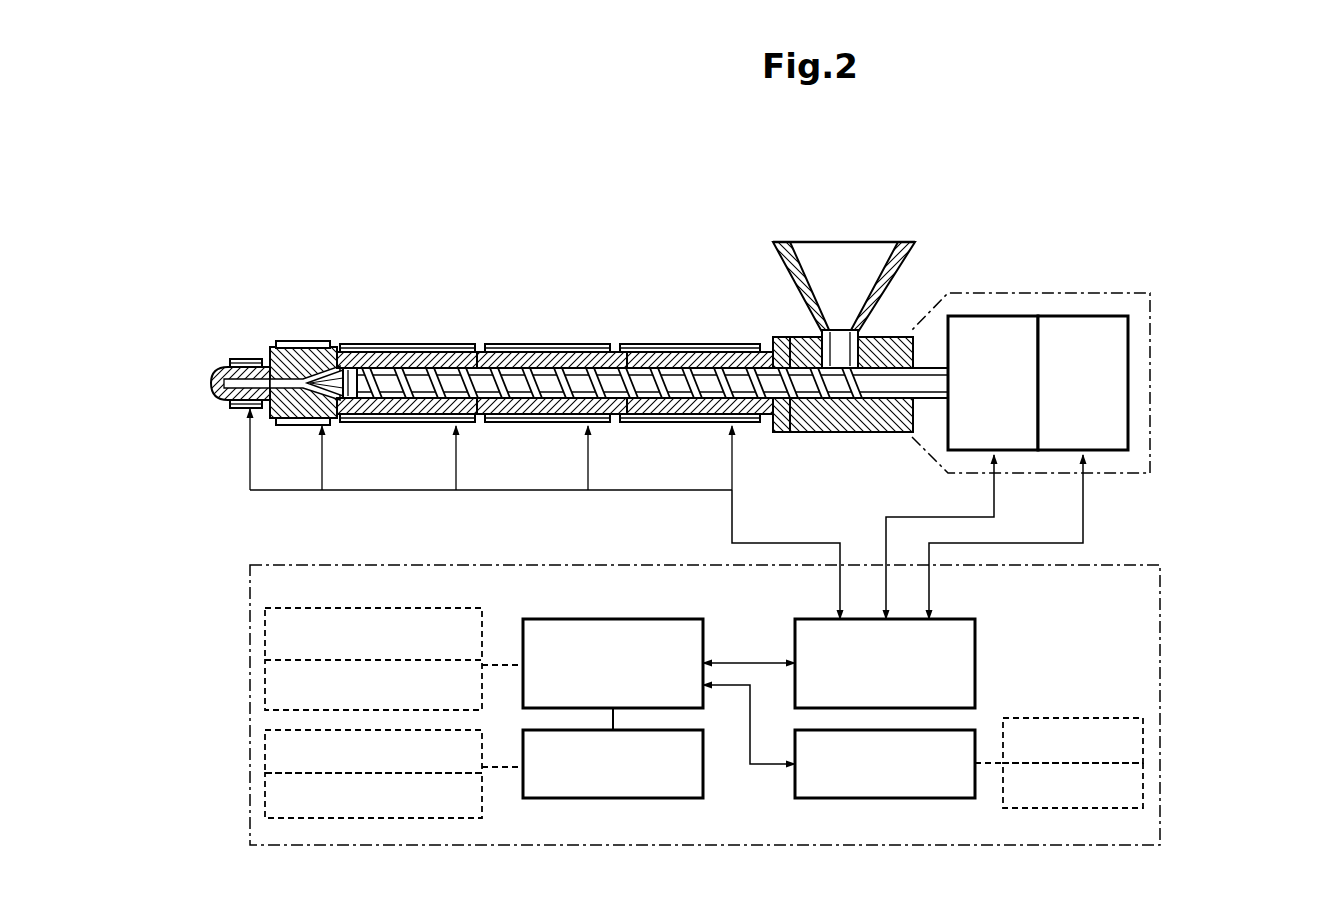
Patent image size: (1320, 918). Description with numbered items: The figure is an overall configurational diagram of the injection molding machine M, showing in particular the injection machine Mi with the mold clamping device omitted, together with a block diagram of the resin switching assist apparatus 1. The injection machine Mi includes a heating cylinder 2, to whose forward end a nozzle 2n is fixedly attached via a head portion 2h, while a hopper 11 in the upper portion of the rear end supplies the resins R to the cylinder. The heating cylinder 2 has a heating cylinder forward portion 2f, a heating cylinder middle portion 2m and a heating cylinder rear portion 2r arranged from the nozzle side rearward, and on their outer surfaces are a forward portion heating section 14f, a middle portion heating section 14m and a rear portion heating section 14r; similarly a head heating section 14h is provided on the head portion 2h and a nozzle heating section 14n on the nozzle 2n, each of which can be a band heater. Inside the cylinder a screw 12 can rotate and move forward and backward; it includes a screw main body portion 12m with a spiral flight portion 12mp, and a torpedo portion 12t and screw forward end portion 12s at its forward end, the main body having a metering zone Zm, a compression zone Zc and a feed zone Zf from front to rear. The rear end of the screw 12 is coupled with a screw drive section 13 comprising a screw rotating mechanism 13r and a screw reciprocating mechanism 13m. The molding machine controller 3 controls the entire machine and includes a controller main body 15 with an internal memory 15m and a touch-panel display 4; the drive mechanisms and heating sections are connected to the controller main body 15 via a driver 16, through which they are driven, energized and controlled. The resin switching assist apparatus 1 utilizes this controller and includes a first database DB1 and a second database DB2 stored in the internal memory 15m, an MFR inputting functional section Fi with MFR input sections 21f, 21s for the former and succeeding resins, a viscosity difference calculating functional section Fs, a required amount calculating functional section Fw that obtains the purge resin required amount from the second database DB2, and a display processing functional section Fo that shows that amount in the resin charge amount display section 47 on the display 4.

The resin switching assist apparatus 1 is at (250, 545).
The heating cylinder 2 is at (555, 420).
The nozzle 2n is at (223, 371).
The head portion 2h is at (281, 347).
The heating cylinder forward portion 2f is at (381, 418).
The heating cylinder middle portion 2m is at (604, 424).
The heating cylinder rear portion 2r is at (749, 429).
The molding machine controller 3 is at (1141, 556).
The display 4 is at (897, 813).
The hopper 11 is at (786, 262).
The screw 12 is at (513, 366).
The screw forward end portion 12s is at (330, 352).
The torpedo portion 12t is at (349, 400).
The screw main body portion 12m is at (673, 366).
The spiral flight portion 12mp is at (707, 400).
The screw drive section 13 is at (1066, 362).
The screw rotating mechanism 13r is at (989, 316).
The screw reciprocating mechanism 13m is at (1128, 386).
The nozzle heating section 14n is at (243, 409).
The head heating section 14h is at (298, 426).
The forward portion heating section 14f is at (400, 344).
The middle portion heating section 14m is at (503, 344).
The rear portion heating section 14r is at (636, 344).
The controller main body 15 is at (580, 620).
The internal memory 15m is at (704, 760).
The driver 16 is at (976, 668).
The MFR input section 21f is at (1138, 740).
The MFR input section 21s is at (1144, 740).
The resin charge amount display section 47 is at (1144, 786).
The resins R is at (815, 243).
The injection molding machine M is at (1017, 228).
The injection machine Mi is at (623, 240).
The metering zone Zm is at (418, 366).
The compression zone Zc is at (562, 366).
The feed zone Zf is at (716, 368).
The viscosity difference calculating functional section Fs is at (263, 633).
The required amount calculating functional section Fw is at (263, 690).
The first database DB1 is at (263, 752).
The second database DB2 is at (263, 797).
The MFR inputting functional section Fi is at (1138, 710).
The display processing functional section Fo is at (1114, 817).